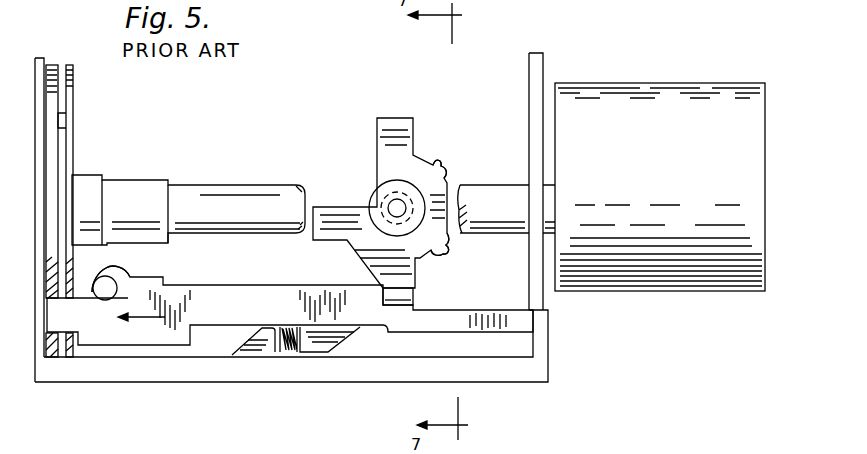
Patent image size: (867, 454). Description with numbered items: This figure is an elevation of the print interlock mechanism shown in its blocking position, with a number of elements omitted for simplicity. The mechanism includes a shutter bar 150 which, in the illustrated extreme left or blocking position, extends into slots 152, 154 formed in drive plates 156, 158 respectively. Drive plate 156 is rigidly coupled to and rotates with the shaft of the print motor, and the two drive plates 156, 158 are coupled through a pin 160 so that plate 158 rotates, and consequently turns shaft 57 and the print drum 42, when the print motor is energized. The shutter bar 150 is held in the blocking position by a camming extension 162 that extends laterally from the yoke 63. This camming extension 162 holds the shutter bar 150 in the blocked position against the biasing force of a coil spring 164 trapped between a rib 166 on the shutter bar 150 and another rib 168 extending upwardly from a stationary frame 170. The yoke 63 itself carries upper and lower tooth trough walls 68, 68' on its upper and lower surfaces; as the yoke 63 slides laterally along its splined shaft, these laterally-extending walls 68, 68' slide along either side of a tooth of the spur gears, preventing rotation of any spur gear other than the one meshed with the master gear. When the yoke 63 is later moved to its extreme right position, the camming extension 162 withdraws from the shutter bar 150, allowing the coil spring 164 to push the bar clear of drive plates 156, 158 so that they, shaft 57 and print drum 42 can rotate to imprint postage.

The print drum 42 is at (682, 169).
The shaft 57 is at (232, 187).
The yoke 63 is at (365, 190).
The upper tooth trough wall 68 is at (462, 256).
The lower tooth trough wall 68' is at (470, 150).
The shutter bar 150 is at (258, 285).
The slot 152 is at (43, 300).
The slot 154 is at (78, 295).
The drive plate 156 is at (50, 64).
The drive plate 158 is at (68, 154).
The pin 160 is at (63, 122).
The camming extension 162 is at (413, 298).
The coil spring 164 is at (285, 352).
The rib 166 is at (342, 338).
The rib 168 is at (262, 334).
The stationary frame 170 is at (172, 372).